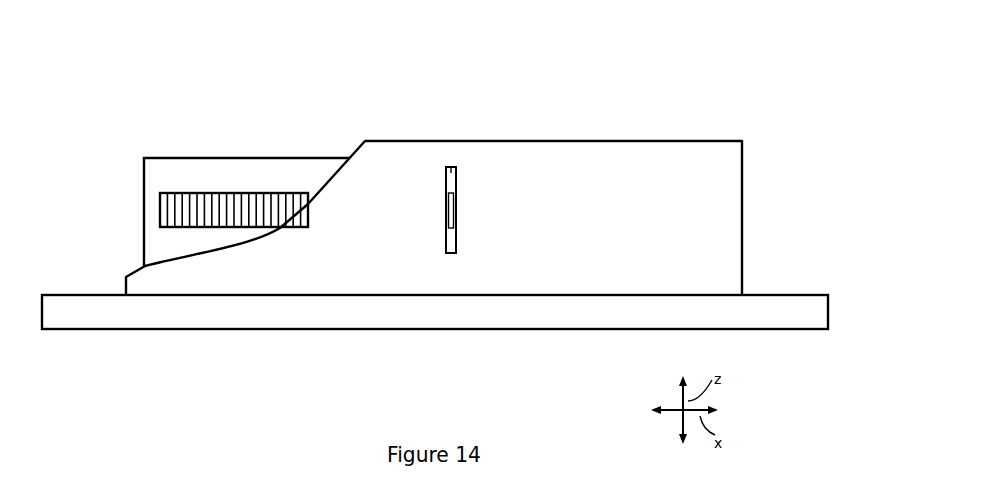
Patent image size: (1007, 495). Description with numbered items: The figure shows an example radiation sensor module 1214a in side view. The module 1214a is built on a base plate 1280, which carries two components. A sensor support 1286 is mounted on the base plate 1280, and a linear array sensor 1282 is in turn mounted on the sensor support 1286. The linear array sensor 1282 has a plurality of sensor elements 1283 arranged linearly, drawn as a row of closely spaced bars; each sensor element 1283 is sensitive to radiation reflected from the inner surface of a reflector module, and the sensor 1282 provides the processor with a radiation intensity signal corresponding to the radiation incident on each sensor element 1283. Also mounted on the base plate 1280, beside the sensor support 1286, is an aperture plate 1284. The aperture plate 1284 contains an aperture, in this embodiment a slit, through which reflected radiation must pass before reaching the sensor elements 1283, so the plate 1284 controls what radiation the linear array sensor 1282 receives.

The base plate 1280 is at (253, 312).
The radiation sensor module 1214a is at (776, 121).
The sensor support 1286 is at (210, 177).
The linear array sensor 1282 is at (173, 192).
The sensor elements 1283 is at (250, 198).
The aperture plate 1284 is at (451, 170).